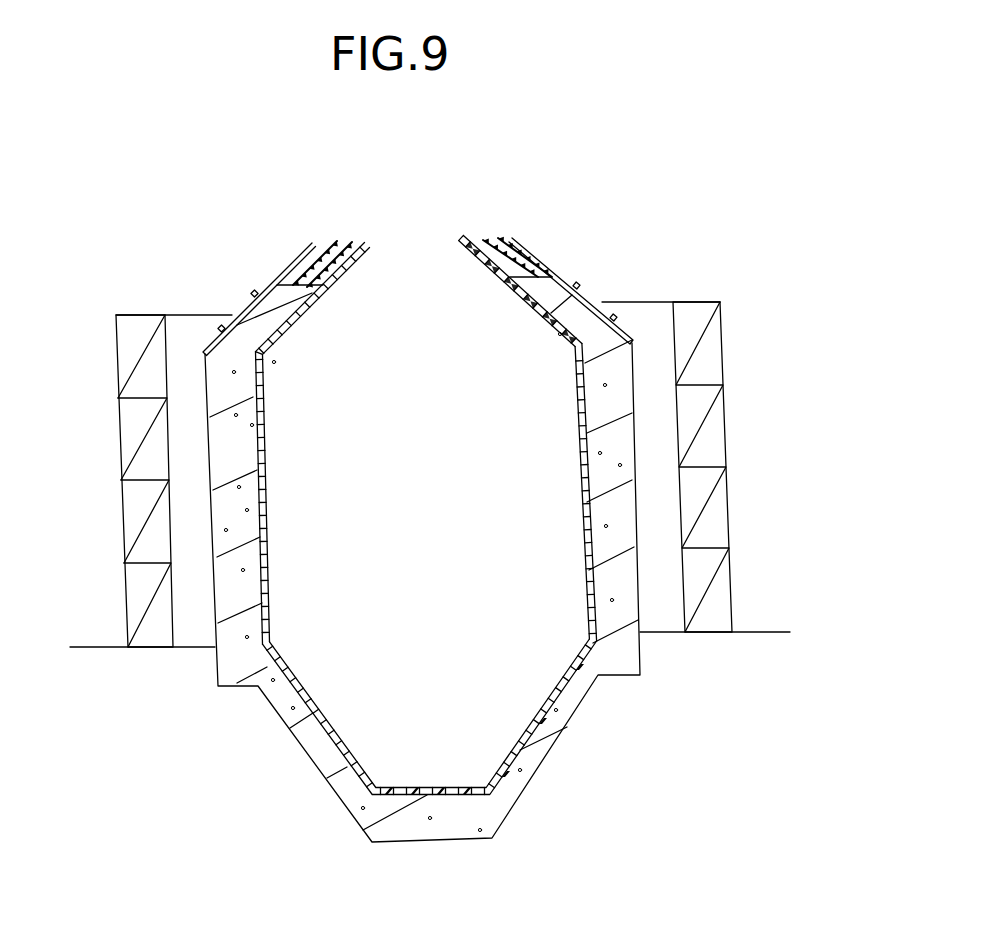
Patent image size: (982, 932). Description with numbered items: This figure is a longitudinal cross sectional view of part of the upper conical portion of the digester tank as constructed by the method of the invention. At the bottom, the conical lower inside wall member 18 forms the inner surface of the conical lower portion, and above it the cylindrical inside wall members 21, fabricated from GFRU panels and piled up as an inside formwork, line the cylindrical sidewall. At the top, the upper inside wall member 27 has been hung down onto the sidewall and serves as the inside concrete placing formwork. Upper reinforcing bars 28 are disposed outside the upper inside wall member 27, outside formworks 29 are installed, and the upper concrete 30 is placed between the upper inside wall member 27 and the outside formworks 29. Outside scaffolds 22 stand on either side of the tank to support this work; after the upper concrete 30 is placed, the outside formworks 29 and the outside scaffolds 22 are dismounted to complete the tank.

The conical lower inside wall member 18 is at (317, 707).
The cylindrical inside wall members 21 is at (267, 518).
The outside scaffolds 22 is at (123, 525).
The upper inside wall member 27 is at (311, 306).
The upper reinforcing bars 28 is at (501, 237).
The outside formworks 29 is at (278, 276).
The upper concrete 30 is at (533, 307).